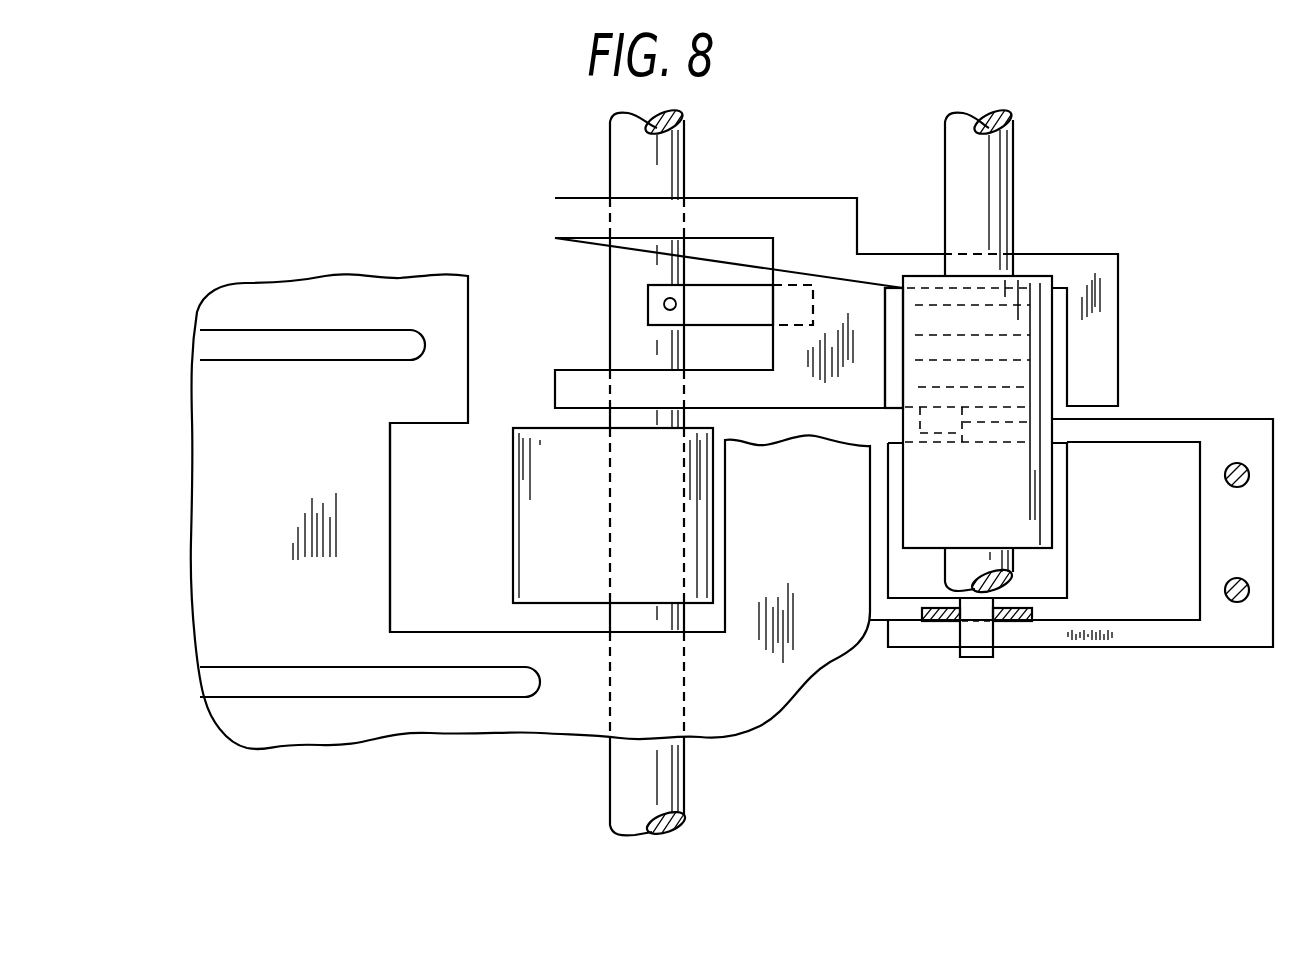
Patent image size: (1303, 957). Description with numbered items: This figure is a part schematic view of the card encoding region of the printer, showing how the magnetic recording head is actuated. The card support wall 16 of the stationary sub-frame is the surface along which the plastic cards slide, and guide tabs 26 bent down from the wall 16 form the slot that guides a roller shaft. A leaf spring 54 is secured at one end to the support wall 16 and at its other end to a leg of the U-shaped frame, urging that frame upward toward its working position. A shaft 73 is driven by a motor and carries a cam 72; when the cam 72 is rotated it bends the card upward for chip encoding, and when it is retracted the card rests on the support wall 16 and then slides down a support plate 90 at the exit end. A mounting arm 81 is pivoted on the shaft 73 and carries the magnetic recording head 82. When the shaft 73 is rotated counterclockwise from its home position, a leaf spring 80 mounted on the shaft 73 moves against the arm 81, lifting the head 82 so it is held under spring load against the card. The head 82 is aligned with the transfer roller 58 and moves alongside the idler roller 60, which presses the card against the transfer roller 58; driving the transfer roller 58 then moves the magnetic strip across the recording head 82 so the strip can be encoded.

The card support wall 16 is at (458, 715).
The guide tabs 26 is at (1018, 617).
The leaf spring 54 is at (1175, 635).
The transfer roller 58 is at (1022, 469).
The idler roller 60 is at (1060, 542).
The cam 72 is at (703, 528).
The shaft 73 is at (673, 770).
The leaf spring 80 is at (718, 300).
The mounting arm 81 is at (804, 217).
The magnetic recording head 82 is at (893, 298).
The support plate 90 is at (362, 522).